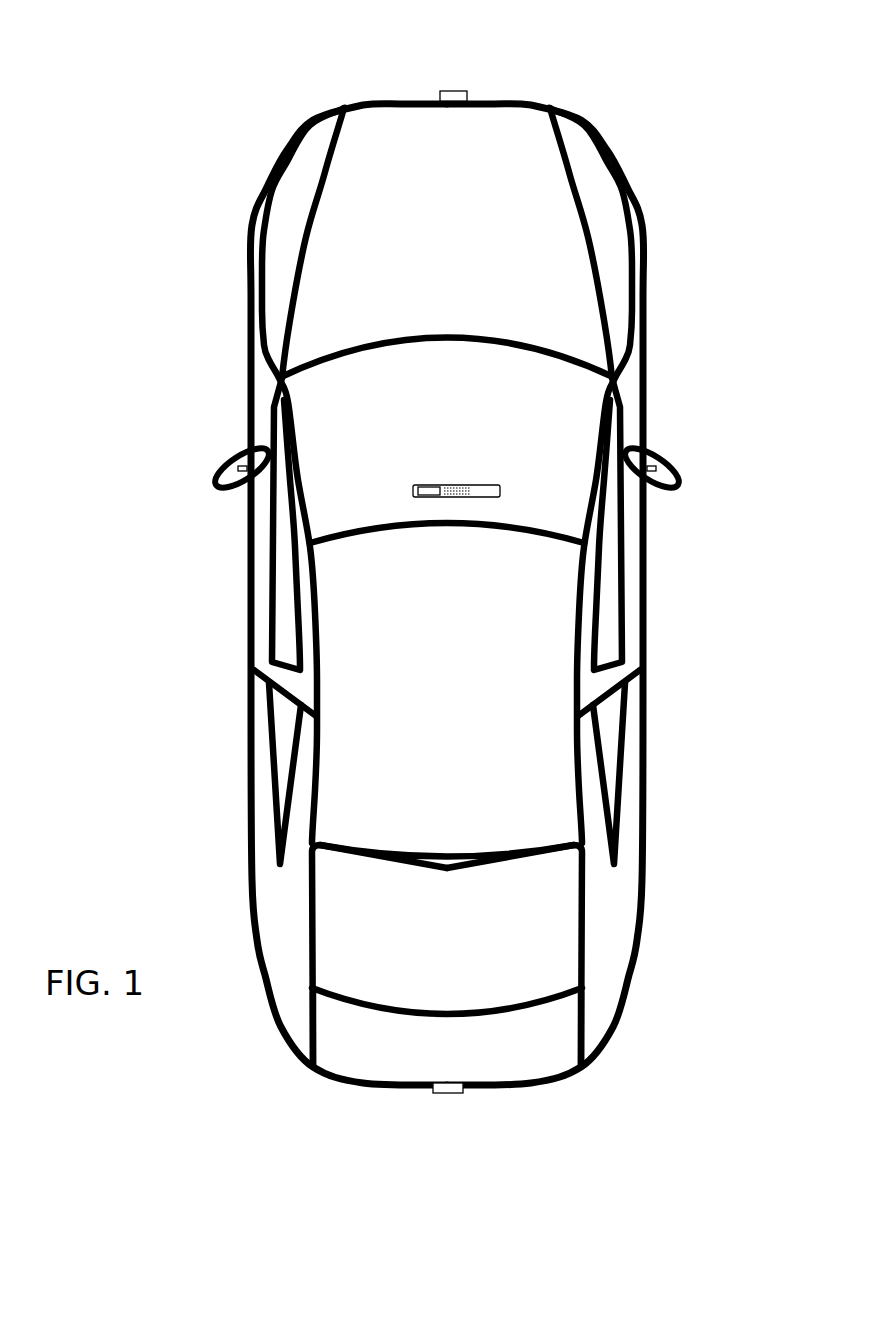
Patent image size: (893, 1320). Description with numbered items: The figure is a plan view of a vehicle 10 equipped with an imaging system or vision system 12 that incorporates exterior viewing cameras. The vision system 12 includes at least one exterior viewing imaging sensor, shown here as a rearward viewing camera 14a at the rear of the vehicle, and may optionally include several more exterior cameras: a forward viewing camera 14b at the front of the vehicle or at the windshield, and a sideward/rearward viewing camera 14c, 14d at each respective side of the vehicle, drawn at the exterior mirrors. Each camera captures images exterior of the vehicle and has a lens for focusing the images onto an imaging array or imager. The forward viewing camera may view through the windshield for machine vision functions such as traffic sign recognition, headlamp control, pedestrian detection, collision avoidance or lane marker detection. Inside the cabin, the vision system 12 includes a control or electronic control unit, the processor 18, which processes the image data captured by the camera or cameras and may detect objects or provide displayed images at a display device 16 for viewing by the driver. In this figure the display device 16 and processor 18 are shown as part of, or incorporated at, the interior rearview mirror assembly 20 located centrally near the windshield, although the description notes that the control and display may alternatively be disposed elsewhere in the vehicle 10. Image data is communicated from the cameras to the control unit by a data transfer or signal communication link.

The vehicle 10 is at (184, 191).
The vision system 12 is at (390, 1118).
The rearward viewing camera 14a is at (453, 1092).
The forward viewing camera 14b is at (456, 92).
The sideward/rearward viewing camera 14c is at (238, 463).
The sideward/rearward viewing camera 14d is at (655, 464).
The display device 16 is at (430, 487).
The processor 18 is at (453, 486).
The interior rearview mirror assembly 20 is at (500, 485).